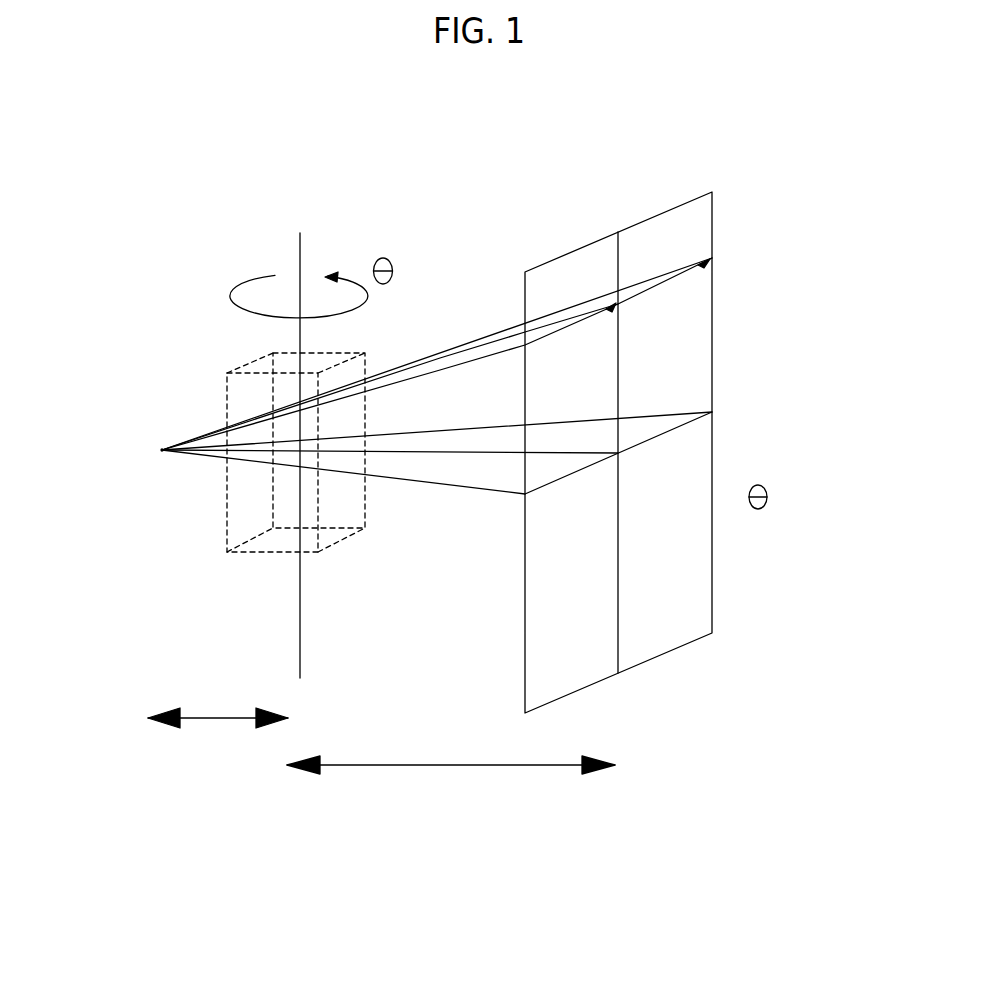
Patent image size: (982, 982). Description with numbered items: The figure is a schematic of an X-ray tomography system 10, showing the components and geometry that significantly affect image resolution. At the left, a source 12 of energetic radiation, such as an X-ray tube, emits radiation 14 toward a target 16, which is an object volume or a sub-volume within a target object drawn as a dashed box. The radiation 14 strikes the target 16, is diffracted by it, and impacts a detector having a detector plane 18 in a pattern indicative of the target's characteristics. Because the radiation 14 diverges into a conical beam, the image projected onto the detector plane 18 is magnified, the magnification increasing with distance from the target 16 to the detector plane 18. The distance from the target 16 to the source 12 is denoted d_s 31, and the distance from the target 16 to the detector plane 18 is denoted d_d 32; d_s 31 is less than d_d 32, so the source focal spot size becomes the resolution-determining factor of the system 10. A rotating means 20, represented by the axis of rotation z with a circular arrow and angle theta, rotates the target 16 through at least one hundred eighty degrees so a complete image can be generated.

The tomography system 10 is at (134, 799).
The source 12 is at (105, 437).
The emitted radiation 14 is at (213, 457).
The target 16 is at (363, 498).
The detector plane 18 is at (715, 305).
The rotating means 20 is at (297, 244).
The distance d_s 31 is at (188, 690).
The distance d_d 32 is at (445, 767).